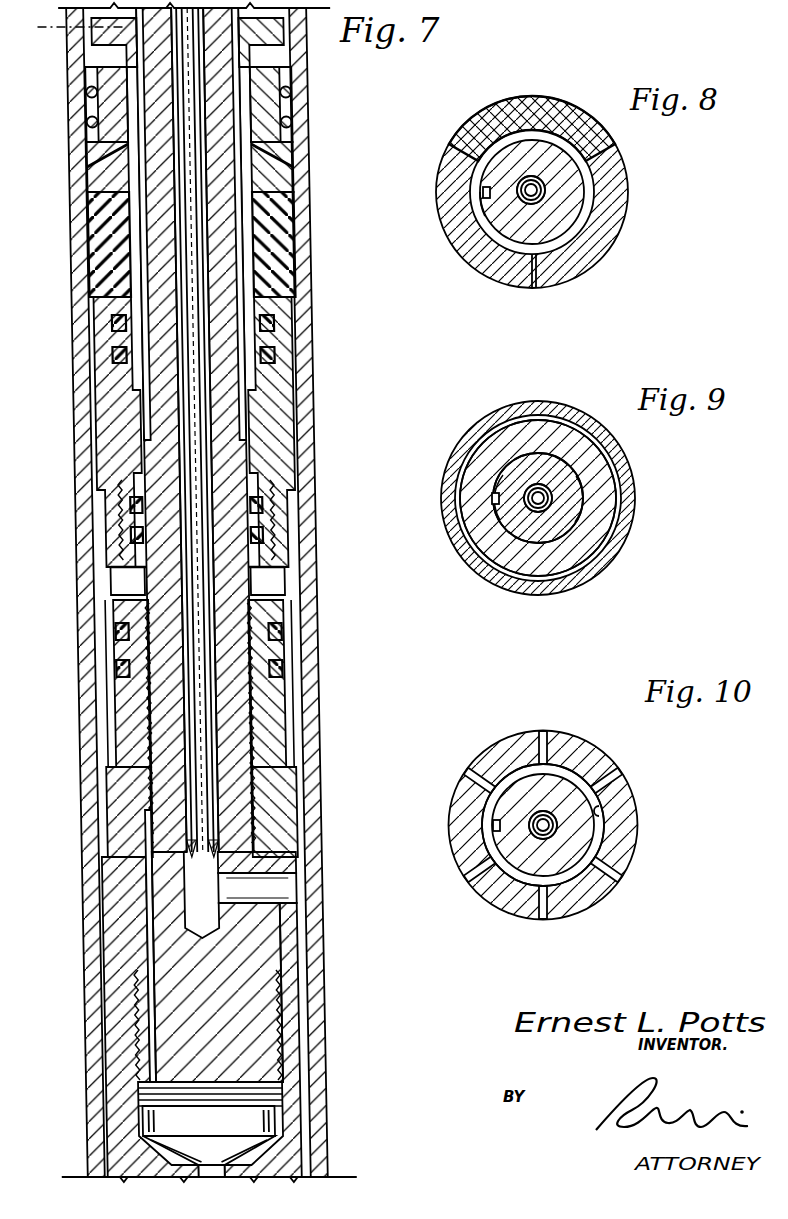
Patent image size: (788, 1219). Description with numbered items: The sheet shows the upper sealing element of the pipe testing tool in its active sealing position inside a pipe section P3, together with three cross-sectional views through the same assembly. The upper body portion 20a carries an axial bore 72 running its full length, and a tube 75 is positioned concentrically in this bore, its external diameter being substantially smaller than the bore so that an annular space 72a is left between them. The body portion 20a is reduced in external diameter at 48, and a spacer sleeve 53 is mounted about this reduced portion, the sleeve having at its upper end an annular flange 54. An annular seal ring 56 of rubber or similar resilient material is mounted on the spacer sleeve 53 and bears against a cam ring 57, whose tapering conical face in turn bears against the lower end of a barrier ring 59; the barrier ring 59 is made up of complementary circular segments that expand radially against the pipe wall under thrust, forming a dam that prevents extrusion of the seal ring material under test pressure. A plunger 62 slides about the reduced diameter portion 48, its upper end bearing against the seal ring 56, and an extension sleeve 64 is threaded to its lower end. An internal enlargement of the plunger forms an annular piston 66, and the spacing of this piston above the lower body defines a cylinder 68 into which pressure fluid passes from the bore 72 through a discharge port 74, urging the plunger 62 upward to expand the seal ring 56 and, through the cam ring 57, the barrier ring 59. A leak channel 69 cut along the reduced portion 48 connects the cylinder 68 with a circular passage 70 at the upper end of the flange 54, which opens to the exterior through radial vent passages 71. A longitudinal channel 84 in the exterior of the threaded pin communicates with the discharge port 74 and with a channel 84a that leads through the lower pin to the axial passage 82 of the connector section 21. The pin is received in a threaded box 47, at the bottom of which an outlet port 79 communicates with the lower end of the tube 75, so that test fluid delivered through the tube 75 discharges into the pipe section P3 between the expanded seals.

In FIG. 7, the radial vent passages 71 is at (70, 22).
In FIG. 10, the radial vent passages 71 is at (463, 778).
In FIG. 7, the circular passage 70 is at (124, 30).
In FIG. 10, the circular passage 70 is at (601, 813).
In FIG. 7, the barrier ring 59 is at (279, 100).
In FIG. 8, the barrier ring 59 is at (478, 116).
In FIG. 7, the cam ring 57 is at (287, 147).
In FIG. 7, the seal ring 56 is at (288, 205).
In FIG. 7, the annular space 72a is at (174, 267).
In FIG. 7, the tube 75 is at (180, 280).
In FIG. 8, the tube 75 is at (600, 255).
In FIG. 9, the tube 75 is at (537, 513).
In FIG. 10, the tube 75 is at (535, 807).
In FIG. 7, the leak channel 69 is at (138, 408).
In FIG. 8, the leak channel 69 is at (483, 192).
In FIG. 10, the leak channel 69 is at (493, 825).
In FIG. 7, the plunger 62 is at (270, 413).
In FIG. 7, the annular piston 66 is at (243, 518).
In FIG. 7, the discharge port 74 is at (150, 583).
In FIG. 7, the cylinder 68 is at (112, 592).
In FIG. 7, the longitudinal channel 84 is at (134, 768).
In FIG. 9, the longitudinal channel 84 is at (492, 498).
In FIG. 7, the pipe section P3 is at (306, 656).
In FIG. 7, the outlet port 79 is at (258, 898).
In FIG. 7, the channel 84a is at (131, 1000).
In FIG. 7, the axial passage 82 is at (194, 1165).
In FIG. 7, the connector section 21 is at (297, 1153).
In FIG. 7, the upper body portion 20a is at (216, 967).
In FIG. 8, the upper body portion 20a is at (503, 232).
In FIG. 9, the upper body portion 20a is at (573, 470).
In FIG. 10, the upper body portion 20a is at (523, 862).
In FIG. 8, the reduced diameter portion 48 is at (480, 228).
In FIG. 9, the reduced diameter portion 48 is at (585, 498).
In FIG. 8, the axial bore 72 is at (530, 200).
In FIG. 9, the axial bore 72 is at (532, 503).
In FIG. 10, the axial bore 72 is at (548, 813).
In FIG. 8, the spacer sleeve 53 is at (550, 247).
In FIG. 9, the extension sleeve 64 is at (627, 507).
In FIG. 9, the threaded box 47 is at (635, 530).
In FIG. 10, the annular flange 54 is at (630, 838).